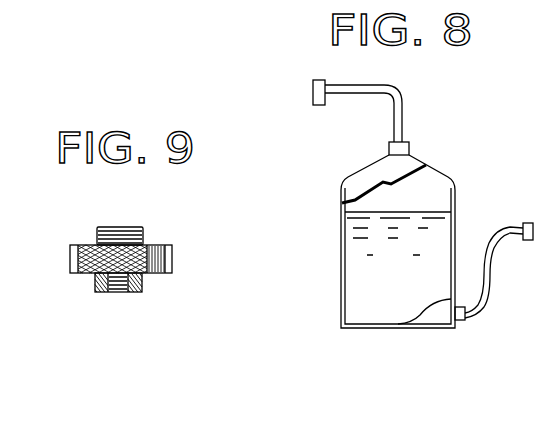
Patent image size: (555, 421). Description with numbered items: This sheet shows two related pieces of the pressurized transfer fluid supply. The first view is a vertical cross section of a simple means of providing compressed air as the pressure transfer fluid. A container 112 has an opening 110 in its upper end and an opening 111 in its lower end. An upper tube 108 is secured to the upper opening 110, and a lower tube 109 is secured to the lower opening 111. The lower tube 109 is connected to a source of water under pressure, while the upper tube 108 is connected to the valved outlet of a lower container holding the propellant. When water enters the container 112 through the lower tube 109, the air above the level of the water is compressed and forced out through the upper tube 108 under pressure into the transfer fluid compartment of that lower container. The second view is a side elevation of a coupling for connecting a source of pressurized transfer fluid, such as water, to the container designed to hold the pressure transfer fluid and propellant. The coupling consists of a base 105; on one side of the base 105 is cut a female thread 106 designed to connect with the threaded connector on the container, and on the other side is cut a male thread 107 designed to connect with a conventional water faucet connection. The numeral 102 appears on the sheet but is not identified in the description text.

In FIG. 8, the filter and supply assembly 102 is at (539, 368).
In FIG. 9, the base 105 is at (172, 262).
In FIG. 9, the female thread 106 is at (129, 293).
In FIG. 9, the male thread 107 is at (143, 235).
In FIG. 8, the upper tube 108 is at (401, 97).
In FIG. 8, the lower tube 109 is at (490, 292).
In FIG. 8, the opening in the upper end 110 is at (409, 149).
In FIG. 8, the opening in the lower end 111 is at (458, 321).
In FIG. 8, the container 112 is at (456, 198).